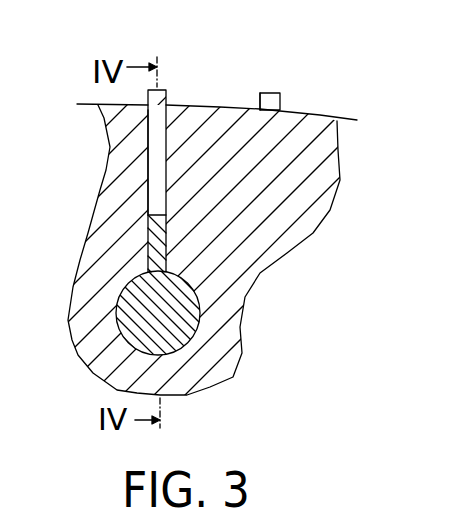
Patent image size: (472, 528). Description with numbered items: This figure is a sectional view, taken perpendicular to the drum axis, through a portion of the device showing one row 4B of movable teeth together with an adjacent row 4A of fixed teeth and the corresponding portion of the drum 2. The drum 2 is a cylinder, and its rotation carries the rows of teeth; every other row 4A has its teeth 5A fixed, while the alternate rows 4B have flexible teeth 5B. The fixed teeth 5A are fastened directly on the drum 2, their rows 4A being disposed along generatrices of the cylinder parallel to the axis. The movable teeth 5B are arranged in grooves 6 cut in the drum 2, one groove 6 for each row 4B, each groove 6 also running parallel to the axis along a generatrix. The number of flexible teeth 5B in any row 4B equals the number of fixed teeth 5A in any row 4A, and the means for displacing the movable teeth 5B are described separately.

The drum 2 is at (321, 115).
The row of fixed teeth 4A is at (279, 93).
The row of flexible teeth 4B is at (166, 104).
The fixed tooth 5A is at (261, 95).
The flexible tooth 5B is at (148, 183).
The groove 6 is at (148, 205).